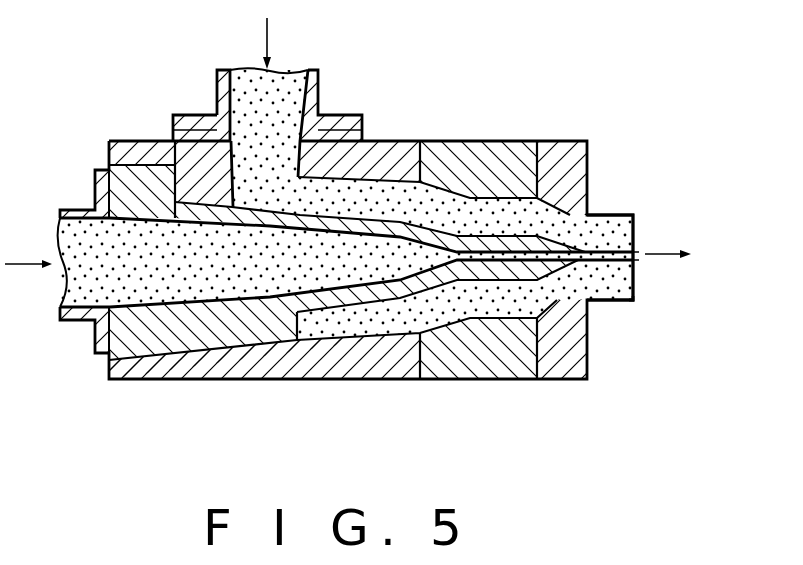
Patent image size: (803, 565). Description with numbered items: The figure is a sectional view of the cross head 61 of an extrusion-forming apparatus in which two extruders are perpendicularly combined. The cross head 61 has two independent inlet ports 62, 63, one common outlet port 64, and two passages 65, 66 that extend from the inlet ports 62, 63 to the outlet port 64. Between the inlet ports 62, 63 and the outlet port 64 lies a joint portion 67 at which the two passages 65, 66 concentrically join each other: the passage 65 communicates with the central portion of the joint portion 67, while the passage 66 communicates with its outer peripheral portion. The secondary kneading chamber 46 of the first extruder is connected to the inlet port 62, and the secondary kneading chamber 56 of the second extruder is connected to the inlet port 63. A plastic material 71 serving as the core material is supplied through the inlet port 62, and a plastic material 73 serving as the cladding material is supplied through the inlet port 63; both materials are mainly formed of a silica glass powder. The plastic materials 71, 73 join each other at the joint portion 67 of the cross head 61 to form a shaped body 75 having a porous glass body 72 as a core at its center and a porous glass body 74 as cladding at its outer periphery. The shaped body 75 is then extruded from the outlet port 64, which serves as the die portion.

The secondary kneading chamber 46 is at (78, 215).
The secondary kneading chamber 56 is at (318, 107).
The cross head 61 is at (300, 384).
The inlet port 62 is at (155, 307).
The inlet port 63 is at (235, 203).
The outlet port 64 is at (570, 301).
The passage 65 is at (380, 270).
The passage 66 is at (360, 197).
The joint portion 67 is at (557, 222).
The plastic material 71 is at (82, 283).
The porous glass body 72 is at (637, 263).
The plastic material 73 is at (293, 83).
The porous glass body 74 is at (620, 227).
The shaped body 75 is at (644, 304).